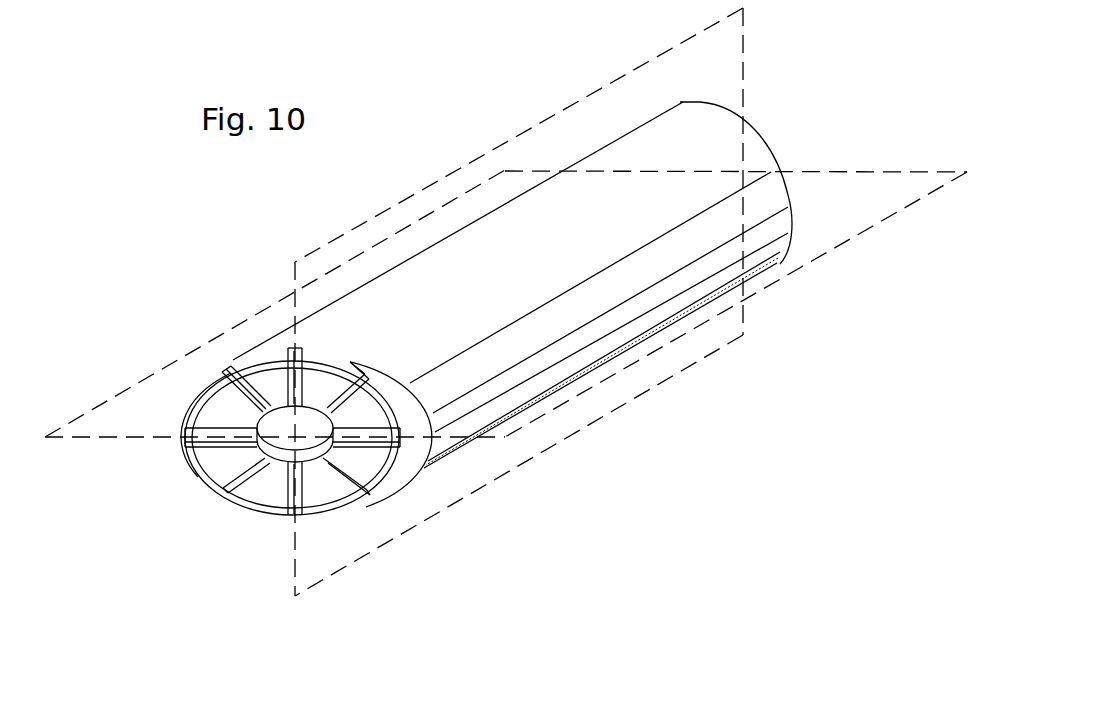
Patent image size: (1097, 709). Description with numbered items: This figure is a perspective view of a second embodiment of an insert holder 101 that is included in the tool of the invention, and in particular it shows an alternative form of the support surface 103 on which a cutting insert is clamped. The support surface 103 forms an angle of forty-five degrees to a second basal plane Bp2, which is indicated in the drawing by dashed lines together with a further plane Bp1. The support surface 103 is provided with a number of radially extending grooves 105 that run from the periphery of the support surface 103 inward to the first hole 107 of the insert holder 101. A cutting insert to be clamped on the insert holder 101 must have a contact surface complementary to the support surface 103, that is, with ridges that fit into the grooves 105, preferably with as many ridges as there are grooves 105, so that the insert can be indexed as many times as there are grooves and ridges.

The insert holder 101 is at (675, 330).
The support surface 103 is at (372, 470).
The radially extending grooves 105 is at (225, 433).
The first hole 107 is at (283, 427).
The horizontal reference plane Bp1 is at (833, 230).
The second basal plane Bp2 is at (467, 480).